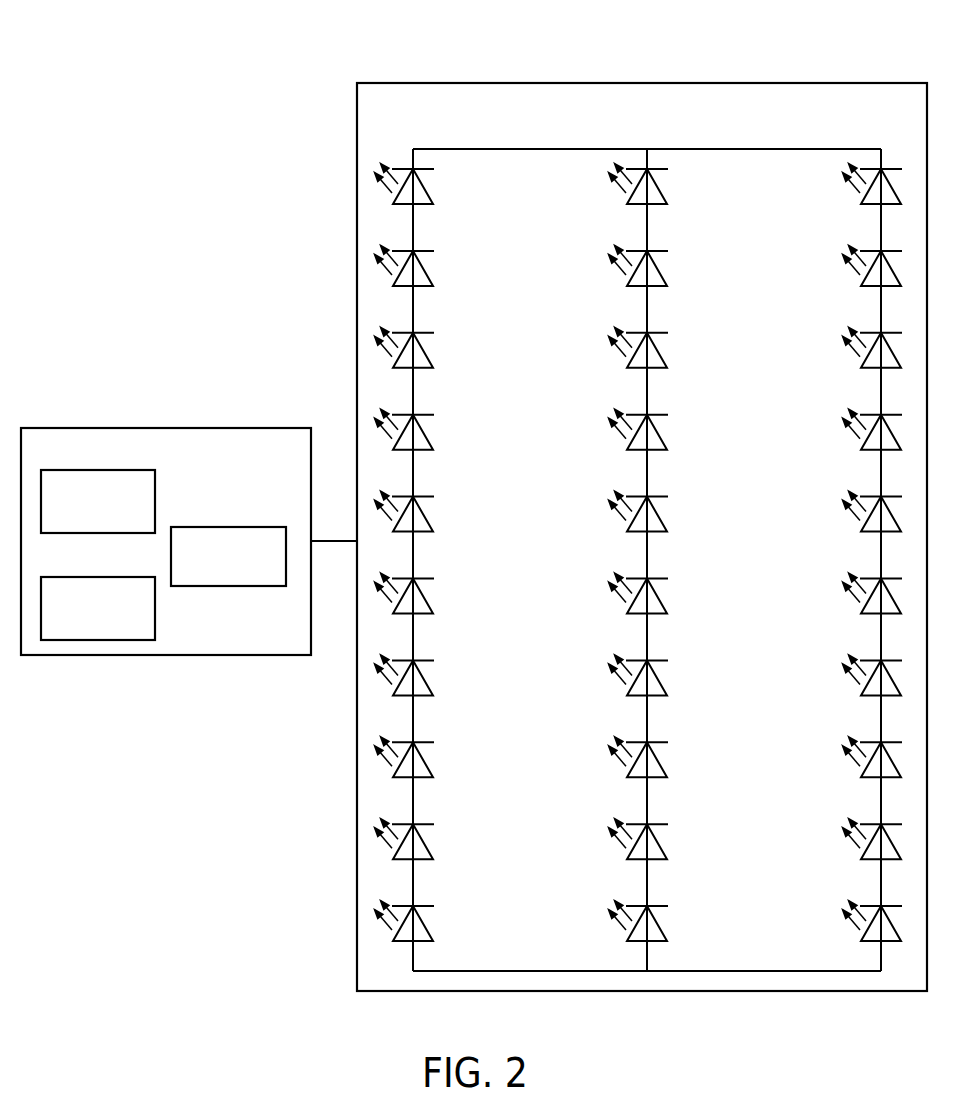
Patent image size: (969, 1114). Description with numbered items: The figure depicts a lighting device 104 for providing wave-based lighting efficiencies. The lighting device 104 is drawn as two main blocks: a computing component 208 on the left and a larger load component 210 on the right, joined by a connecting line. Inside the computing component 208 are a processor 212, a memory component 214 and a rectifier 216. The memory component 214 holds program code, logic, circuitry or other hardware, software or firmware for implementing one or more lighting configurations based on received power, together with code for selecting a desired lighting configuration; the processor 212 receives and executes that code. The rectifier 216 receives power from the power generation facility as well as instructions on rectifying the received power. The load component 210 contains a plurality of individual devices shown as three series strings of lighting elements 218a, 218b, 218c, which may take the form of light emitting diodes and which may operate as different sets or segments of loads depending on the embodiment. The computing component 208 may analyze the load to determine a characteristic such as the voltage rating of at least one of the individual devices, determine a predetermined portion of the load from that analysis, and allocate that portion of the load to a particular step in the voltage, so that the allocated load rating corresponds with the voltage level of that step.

The lighting device 104 is at (150, 56).
The computing component 208 is at (165, 428).
The load component 210 is at (737, 83).
The processor 212 is at (155, 502).
The memory component 214 is at (93, 640).
The rectifier 216 is at (225, 586).
The lighting element 218a is at (456, 560).
The lighting element 218b is at (696, 560).
The lighting element 218c is at (817, 560).